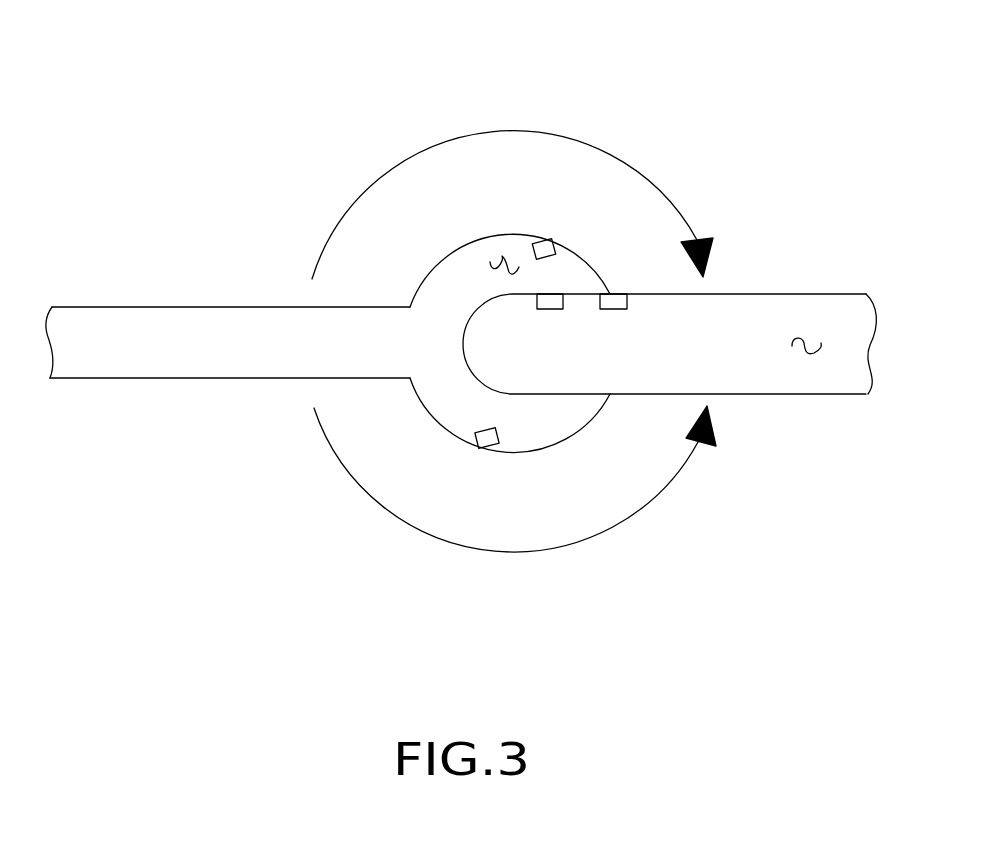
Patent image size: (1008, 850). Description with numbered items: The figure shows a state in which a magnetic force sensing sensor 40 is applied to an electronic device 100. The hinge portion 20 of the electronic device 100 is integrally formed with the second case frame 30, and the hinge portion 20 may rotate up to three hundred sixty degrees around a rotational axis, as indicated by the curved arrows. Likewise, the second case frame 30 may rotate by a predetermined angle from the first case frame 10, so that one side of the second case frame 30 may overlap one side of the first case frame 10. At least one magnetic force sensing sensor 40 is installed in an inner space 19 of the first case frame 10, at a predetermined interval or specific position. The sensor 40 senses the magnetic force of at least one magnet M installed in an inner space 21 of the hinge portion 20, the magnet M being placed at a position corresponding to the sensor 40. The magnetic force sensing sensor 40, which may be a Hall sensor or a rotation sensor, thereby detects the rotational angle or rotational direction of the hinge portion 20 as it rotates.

The electronic device 100 is at (160, 93).
The first case frame 10 is at (747, 322).
The inner space 19 is at (802, 351).
The hinge portion 20 is at (465, 272).
The inner space 21 is at (497, 260).
The second case frame 30 is at (240, 325).
The magnetic force sensing sensor 40 is at (553, 303).
The magnet M is at (547, 246).